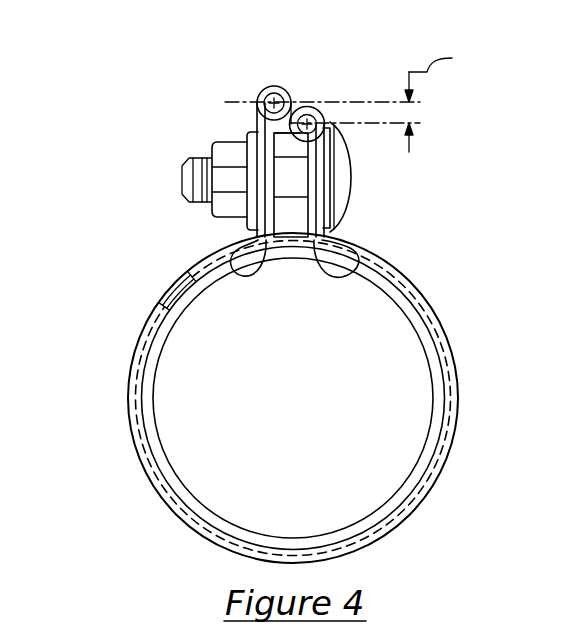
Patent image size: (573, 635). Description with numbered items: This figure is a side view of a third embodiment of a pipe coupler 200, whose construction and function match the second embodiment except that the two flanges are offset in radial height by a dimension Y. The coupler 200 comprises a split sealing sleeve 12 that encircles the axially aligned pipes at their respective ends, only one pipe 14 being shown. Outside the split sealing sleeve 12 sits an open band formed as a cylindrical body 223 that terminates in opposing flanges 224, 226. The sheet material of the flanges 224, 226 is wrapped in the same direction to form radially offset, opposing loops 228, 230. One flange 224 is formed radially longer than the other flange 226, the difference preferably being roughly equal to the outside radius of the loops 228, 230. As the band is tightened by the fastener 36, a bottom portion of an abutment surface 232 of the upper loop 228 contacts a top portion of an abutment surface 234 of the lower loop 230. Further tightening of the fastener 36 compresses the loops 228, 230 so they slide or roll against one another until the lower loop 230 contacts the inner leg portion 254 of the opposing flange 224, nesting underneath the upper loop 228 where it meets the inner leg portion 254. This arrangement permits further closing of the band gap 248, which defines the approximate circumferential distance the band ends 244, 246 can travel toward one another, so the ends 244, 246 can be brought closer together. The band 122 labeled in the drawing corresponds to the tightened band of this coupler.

The coupler 200 is at (112, 52).
The split sealing sleeve 12 is at (157, 335).
The pipe 14 is at (441, 377).
The fastener 36 is at (364, 172).
The clamp band 122 is at (437, 322).
The cylindrical body 223 is at (139, 465).
The flange 224 is at (246, 121).
The flange 226 is at (342, 114).
The loop 228 is at (263, 90).
The loop 230 is at (318, 108).
The abutment surface 232 is at (306, 106).
The abutment surface 234 is at (280, 92).
The end 244 is at (223, 265).
The end 246 is at (352, 265).
The band gap 248 is at (291, 232).
The inner leg portion 254 is at (272, 175).